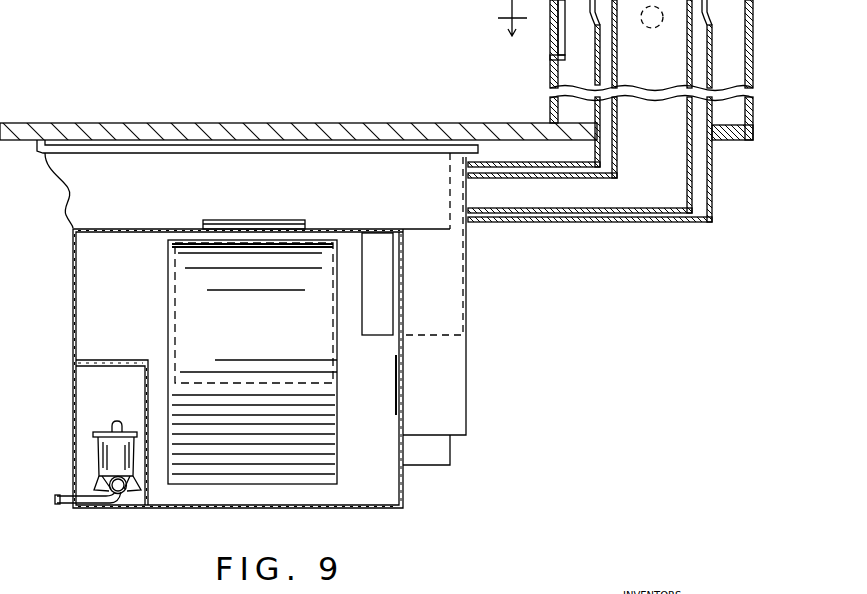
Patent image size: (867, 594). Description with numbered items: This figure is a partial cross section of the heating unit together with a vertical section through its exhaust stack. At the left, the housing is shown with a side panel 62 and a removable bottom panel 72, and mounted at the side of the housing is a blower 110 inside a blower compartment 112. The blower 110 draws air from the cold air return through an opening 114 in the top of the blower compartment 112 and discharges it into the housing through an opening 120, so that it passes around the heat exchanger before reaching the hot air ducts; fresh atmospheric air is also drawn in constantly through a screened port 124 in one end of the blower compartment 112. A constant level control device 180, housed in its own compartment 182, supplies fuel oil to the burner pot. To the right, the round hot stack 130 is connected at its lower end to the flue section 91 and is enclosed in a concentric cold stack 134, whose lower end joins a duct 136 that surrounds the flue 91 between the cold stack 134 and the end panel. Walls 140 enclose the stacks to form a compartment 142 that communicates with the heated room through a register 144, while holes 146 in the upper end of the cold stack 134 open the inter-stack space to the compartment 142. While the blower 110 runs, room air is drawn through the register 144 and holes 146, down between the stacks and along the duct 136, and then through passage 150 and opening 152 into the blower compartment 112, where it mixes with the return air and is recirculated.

The side panel 62 is at (70, 192).
The bottom panel 72 is at (442, 458).
The flue section 91 is at (524, 206).
The blower 110 is at (259, 348).
The blower compartment 112 is at (405, 494).
The opening 114 is at (257, 219).
The opening 120 is at (185, 298).
The screened port 124 is at (395, 403).
The hot stack 130 is at (692, 163).
The cold stack 134 is at (712, 192).
The duct 136 is at (609, 222).
The walls 140 is at (550, 65).
The compartment 142 is at (568, 77).
The register 144 is at (558, 35).
The holes 146 is at (598, 24).
The passage 150 is at (455, 318).
The opening 152 is at (378, 327).
The constant level control device 180 is at (105, 463).
The compartment 182 is at (88, 395).